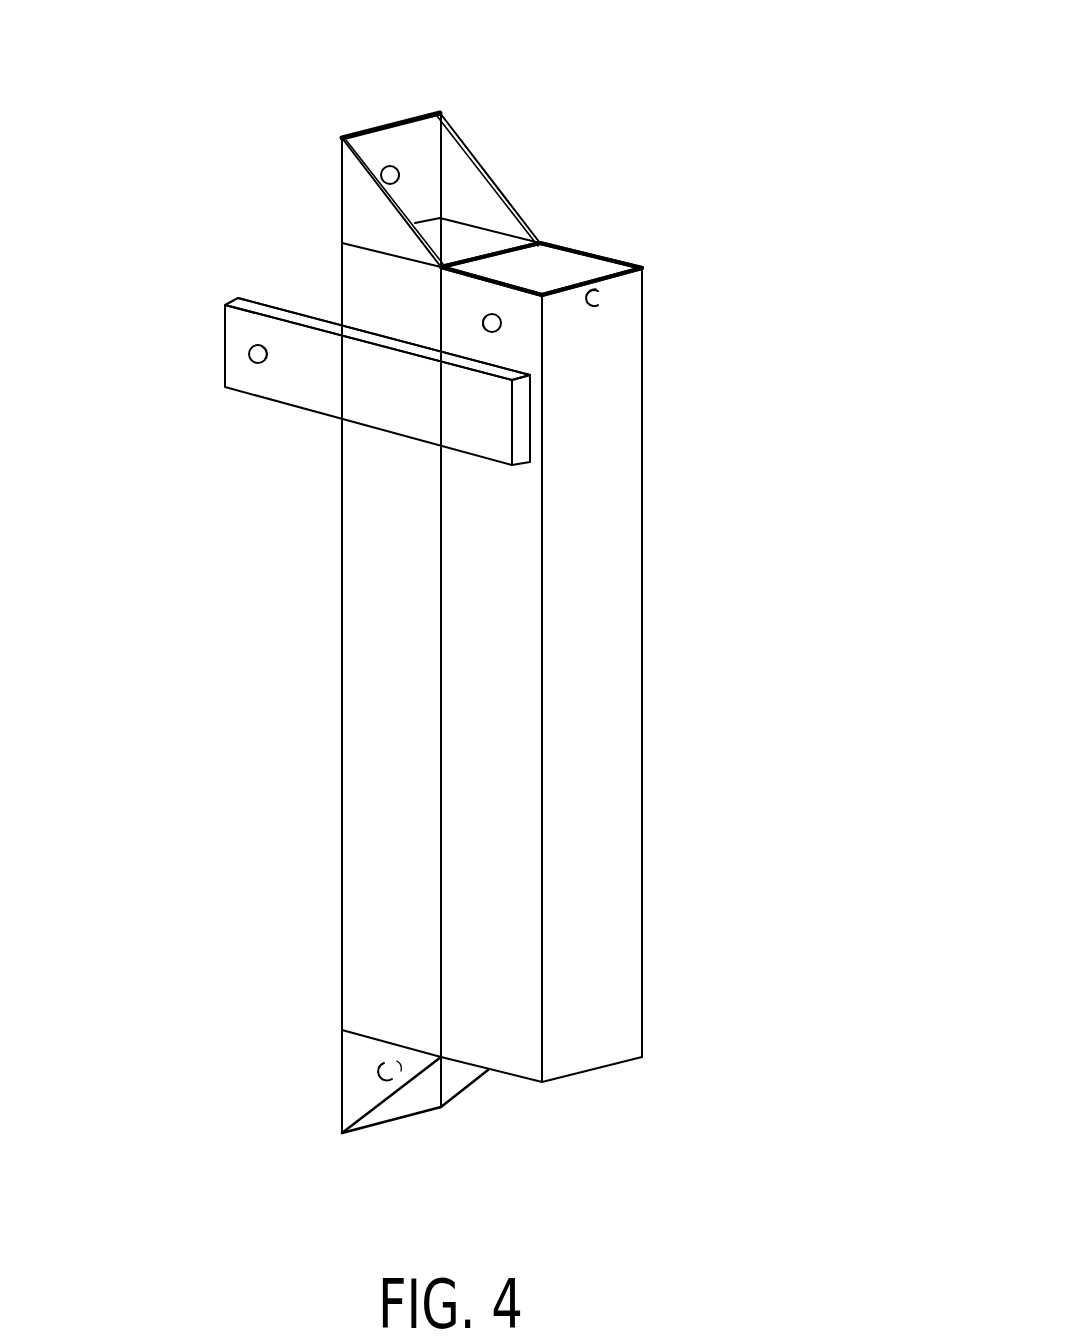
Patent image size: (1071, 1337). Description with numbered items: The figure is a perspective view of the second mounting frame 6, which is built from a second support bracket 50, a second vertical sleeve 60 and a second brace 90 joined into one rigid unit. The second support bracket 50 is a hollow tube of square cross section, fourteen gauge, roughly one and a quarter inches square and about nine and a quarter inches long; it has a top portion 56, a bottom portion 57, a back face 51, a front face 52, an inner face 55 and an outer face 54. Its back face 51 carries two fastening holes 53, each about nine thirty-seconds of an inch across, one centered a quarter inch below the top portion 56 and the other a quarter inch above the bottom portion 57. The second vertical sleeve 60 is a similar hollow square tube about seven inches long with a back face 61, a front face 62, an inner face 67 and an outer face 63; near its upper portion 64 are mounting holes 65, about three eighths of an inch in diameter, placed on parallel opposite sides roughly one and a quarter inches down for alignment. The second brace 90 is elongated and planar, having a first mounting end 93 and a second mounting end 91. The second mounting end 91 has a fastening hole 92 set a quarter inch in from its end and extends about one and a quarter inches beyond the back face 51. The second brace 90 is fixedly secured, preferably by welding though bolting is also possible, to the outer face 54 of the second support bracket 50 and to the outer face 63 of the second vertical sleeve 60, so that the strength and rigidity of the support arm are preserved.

The second mounting frame 6 is at (707, 93).
The second support bracket 50 is at (337, 606).
The back face 51 is at (342, 615).
The front face 52 is at (437, 903).
The fastening holes 53 is at (389, 166).
The outer face 54 is at (397, 705).
The inner face 55 is at (465, 192).
The top portion 56 is at (423, 108).
The bottom portion 57 is at (420, 1112).
The second vertical sleeve 60 is at (574, 628).
The back face 61 is at (445, 722).
The front face 62 is at (602, 565).
The outer face 63 is at (483, 838).
The upper portion 64 is at (613, 262).
The mounting holes 65 is at (482, 323).
The inner face 67 is at (565, 270).
The second brace 90 is at (287, 336).
The second mounting end 91 is at (225, 352).
The fastening hole 92 is at (256, 368).
The first mounting end 93 is at (468, 360).